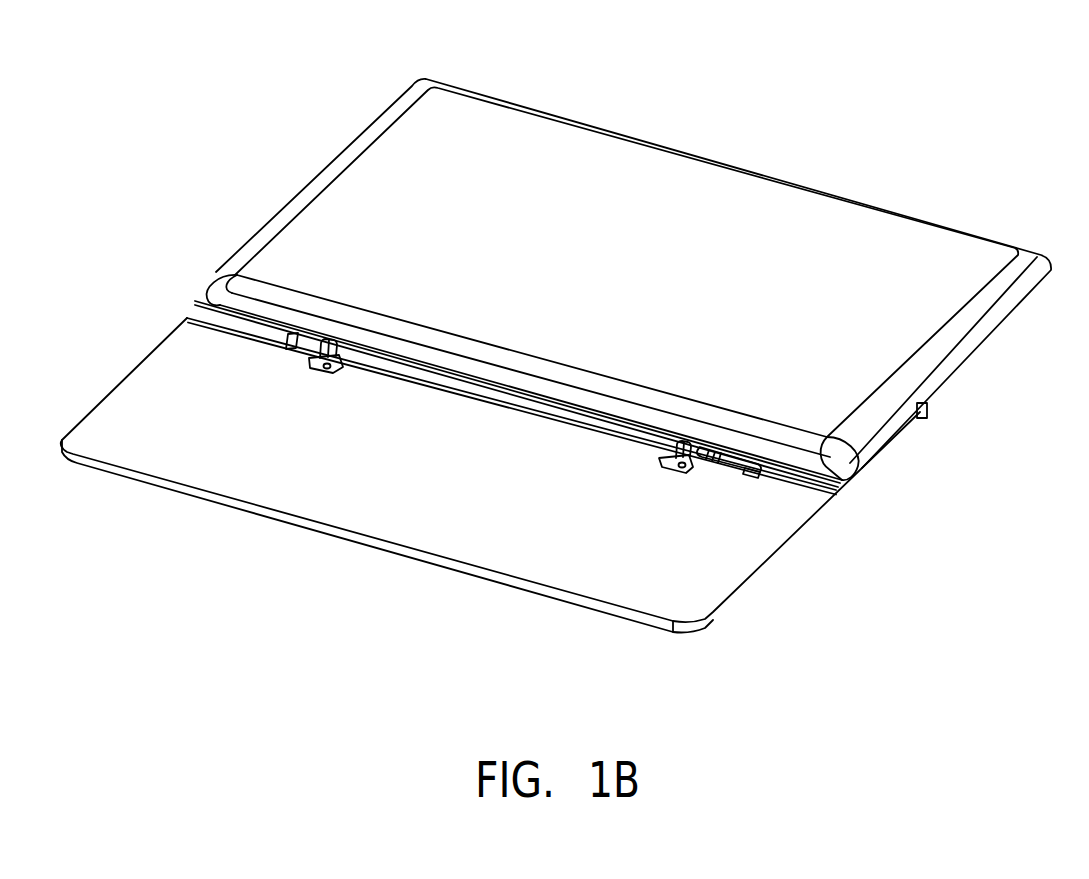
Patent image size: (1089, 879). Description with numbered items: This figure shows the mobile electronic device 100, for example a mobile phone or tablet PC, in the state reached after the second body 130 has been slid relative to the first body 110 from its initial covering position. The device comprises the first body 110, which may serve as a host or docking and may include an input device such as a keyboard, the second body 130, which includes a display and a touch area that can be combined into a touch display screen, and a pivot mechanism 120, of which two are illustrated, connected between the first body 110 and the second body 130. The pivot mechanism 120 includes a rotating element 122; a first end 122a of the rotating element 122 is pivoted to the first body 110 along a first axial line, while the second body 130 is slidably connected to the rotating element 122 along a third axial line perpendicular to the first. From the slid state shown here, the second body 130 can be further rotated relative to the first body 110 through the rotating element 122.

The mobile electronic device 100 is at (556, 363).
The first body 110 is at (212, 467).
The pivot mechanism 120 is at (664, 471).
The rotating element 122 is at (725, 464).
The first end 122a is at (750, 473).
The second body 130 is at (752, 196).